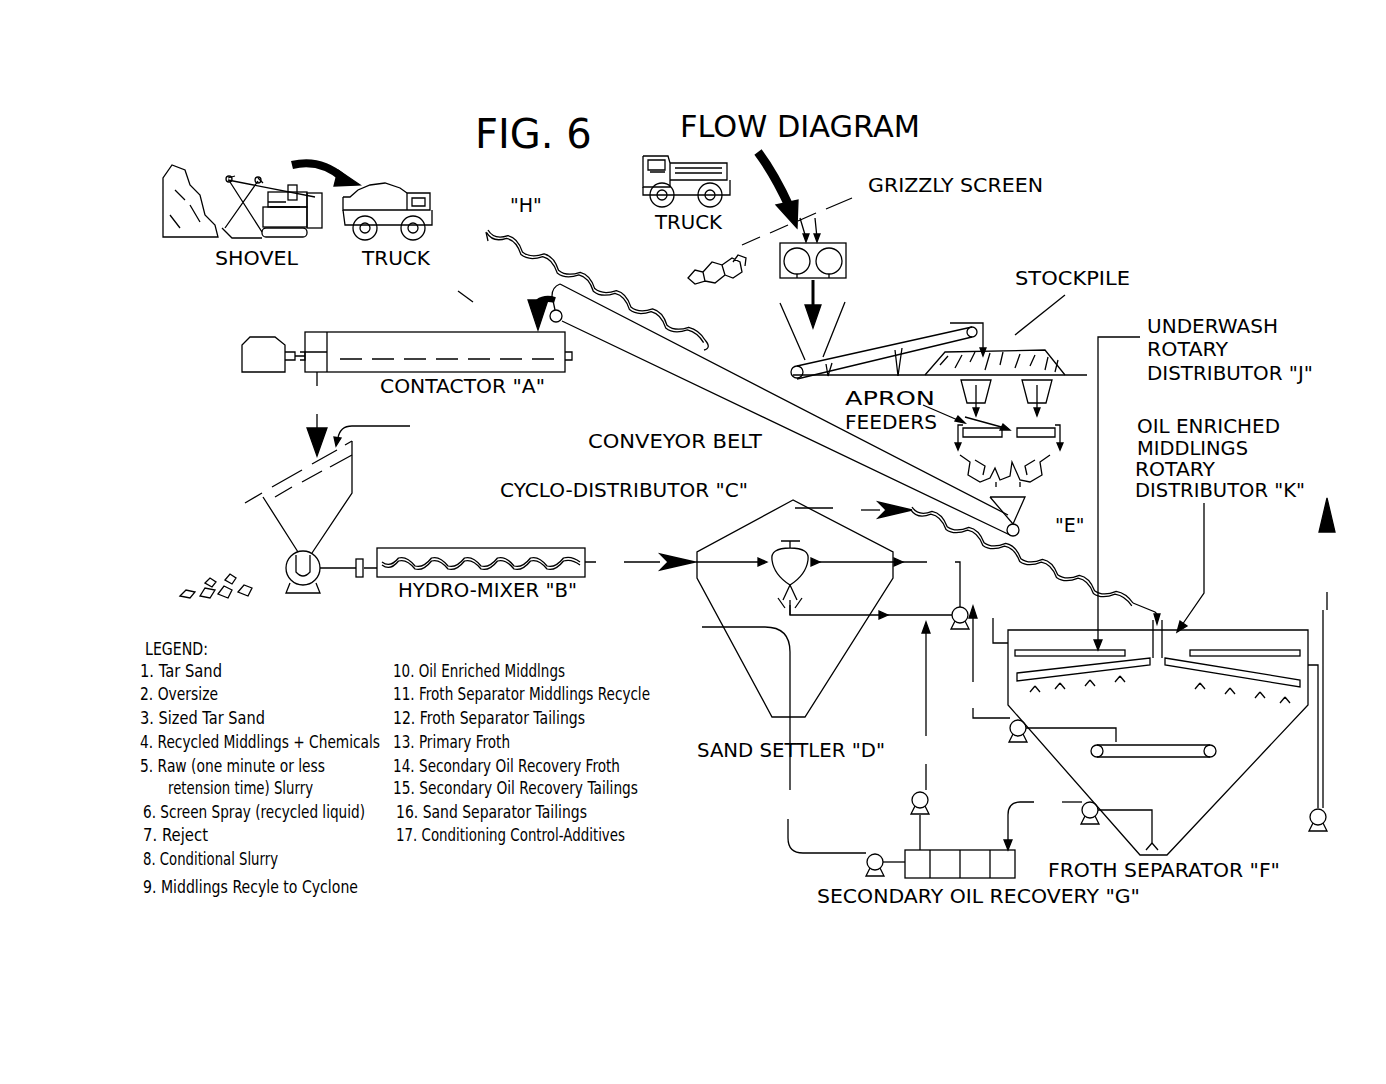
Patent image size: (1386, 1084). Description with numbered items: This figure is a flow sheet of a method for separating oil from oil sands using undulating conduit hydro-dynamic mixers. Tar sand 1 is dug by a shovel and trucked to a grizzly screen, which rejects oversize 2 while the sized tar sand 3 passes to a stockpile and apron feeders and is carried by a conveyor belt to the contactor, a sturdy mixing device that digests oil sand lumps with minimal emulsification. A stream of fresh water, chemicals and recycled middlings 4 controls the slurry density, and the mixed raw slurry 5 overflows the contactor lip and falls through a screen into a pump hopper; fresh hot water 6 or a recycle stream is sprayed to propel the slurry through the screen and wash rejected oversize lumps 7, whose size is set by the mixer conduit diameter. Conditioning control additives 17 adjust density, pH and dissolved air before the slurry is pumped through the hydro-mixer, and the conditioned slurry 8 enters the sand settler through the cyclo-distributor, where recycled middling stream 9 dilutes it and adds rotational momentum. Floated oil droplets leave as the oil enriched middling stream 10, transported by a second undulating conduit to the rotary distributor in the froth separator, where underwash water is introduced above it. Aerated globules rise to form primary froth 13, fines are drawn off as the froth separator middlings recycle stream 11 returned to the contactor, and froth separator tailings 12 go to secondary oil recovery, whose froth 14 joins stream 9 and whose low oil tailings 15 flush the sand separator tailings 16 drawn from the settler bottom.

The tar sand 1 is at (415, 113).
The oversize 2 is at (702, 256).
The sized tar sand 3 is at (784, 410).
The recycled middlings and chemicals stream 4 is at (514, 327).
The raw slurry 5 is at (317, 414).
The fresh hot water 6 is at (493, 426).
The rejected oversize lumps 7 is at (223, 520).
The conditioned slurry 8 is at (739, 562).
The recycled middling stream 9 is at (879, 588).
The oil enriched middling stream 10 is at (977, 560).
The froth separator middlings recycle stream 11 is at (486, 293).
The froth separator tailings 12 is at (1078, 819).
The primary froth 13 is at (1327, 530).
The secondary oil recovery froth 14 is at (925, 736).
The secondary oil recovery tailings 15 is at (839, 833).
The sand separator tailings 16 is at (640, 653).
The conditioning control additives 17 is at (370, 568).